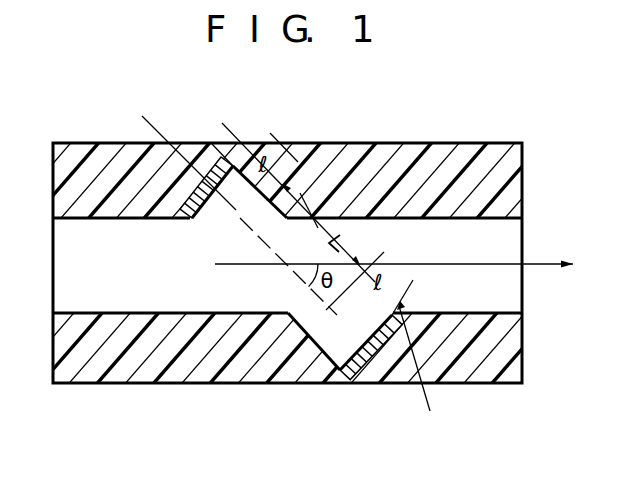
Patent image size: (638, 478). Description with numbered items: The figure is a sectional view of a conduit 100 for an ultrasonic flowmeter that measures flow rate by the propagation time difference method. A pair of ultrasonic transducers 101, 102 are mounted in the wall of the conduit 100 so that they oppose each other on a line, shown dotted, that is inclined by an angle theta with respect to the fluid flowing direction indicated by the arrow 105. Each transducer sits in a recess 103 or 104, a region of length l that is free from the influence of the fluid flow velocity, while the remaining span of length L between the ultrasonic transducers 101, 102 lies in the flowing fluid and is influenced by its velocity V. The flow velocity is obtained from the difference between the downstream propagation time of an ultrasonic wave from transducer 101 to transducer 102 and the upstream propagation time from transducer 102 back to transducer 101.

The conduit 100 is at (471, 143).
The ultrasonic transducer 101 is at (236, 158).
The ultrasonic transducer 102 is at (340, 368).
The recess 103 is at (216, 208).
The recess 104 is at (304, 318).
The arrow 105 is at (466, 263).